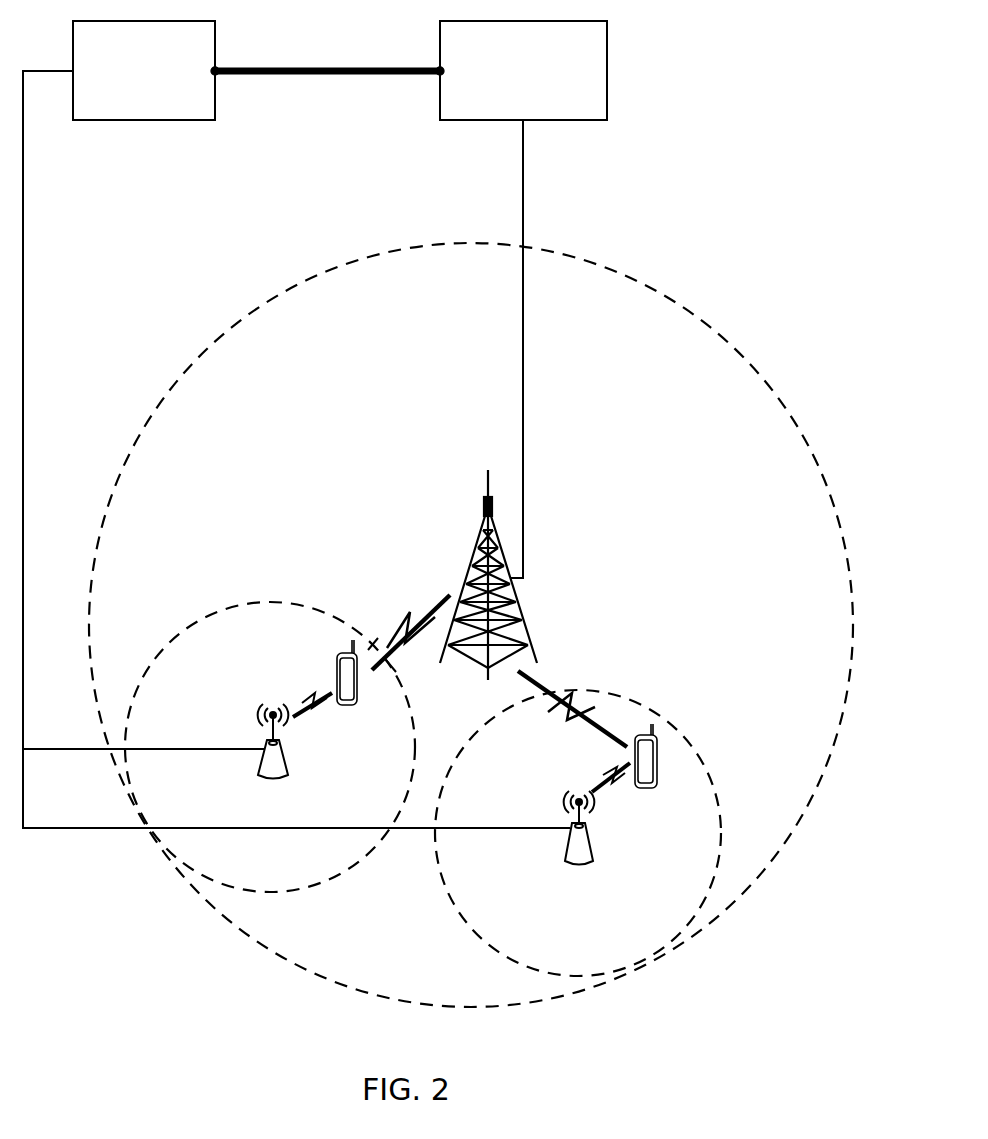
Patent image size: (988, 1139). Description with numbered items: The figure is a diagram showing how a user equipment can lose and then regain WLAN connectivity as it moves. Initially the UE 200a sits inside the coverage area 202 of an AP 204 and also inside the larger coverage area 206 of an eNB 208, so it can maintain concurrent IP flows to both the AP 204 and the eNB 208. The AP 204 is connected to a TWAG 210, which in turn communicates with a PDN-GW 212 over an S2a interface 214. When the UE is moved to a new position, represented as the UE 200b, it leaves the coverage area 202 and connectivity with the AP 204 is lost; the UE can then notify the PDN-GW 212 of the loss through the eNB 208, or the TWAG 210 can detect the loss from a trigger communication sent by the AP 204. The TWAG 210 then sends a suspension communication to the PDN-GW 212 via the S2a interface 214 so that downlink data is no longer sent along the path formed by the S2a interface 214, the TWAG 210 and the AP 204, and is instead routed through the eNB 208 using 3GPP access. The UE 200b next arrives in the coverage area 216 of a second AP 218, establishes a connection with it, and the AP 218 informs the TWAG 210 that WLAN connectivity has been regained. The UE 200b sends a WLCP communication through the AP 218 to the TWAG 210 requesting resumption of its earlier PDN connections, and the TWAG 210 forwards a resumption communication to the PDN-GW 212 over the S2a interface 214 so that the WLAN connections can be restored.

The UE 200a is at (660, 786).
The UE 200b is at (358, 705).
The coverage area 202 is at (665, 722).
The AP 204 is at (592, 862).
The coverage area 206 is at (718, 340).
The eNB 208 is at (530, 620).
The TWAG 210 is at (193, 82).
The PDN-GW 212 is at (577, 82).
The S2a interface 214 is at (330, 66).
The coverage area 216 is at (206, 620).
The AP 218 is at (258, 772).